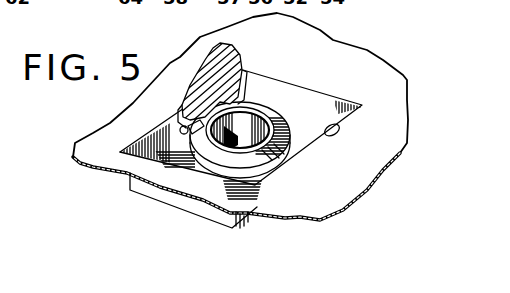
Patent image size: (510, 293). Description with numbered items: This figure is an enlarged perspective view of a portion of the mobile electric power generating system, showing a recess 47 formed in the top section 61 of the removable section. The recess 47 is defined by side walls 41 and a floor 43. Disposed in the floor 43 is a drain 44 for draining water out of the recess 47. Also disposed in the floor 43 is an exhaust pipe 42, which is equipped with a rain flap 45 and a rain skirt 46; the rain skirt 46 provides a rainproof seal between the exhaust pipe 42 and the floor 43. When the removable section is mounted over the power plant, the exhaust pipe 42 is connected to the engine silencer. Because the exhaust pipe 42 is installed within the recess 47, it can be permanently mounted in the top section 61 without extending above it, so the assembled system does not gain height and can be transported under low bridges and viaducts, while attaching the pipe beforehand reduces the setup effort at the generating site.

The side walls 41 is at (140, 150).
The exhaust pipe 42 is at (227, 125).
The floor 43 is at (257, 189).
The drain 44 is at (338, 126).
The rain flap 45 is at (235, 46).
The rain skirt 46 is at (293, 157).
The recess 47 is at (292, 132).
The top section 61 is at (320, 50).